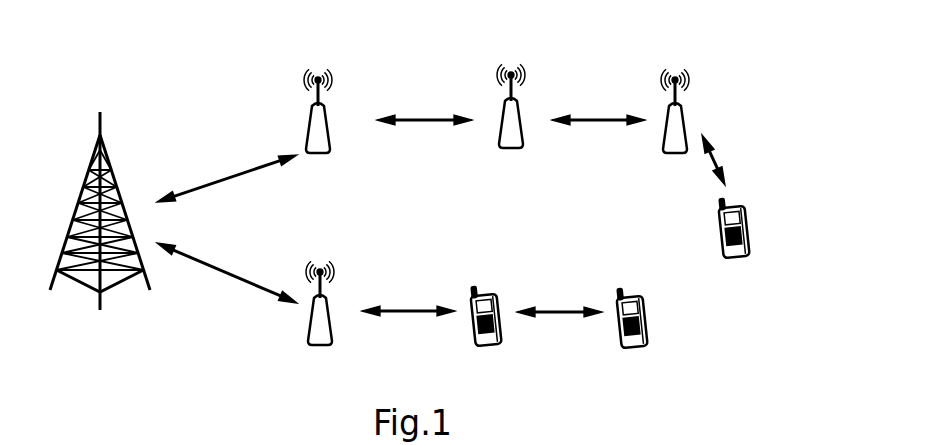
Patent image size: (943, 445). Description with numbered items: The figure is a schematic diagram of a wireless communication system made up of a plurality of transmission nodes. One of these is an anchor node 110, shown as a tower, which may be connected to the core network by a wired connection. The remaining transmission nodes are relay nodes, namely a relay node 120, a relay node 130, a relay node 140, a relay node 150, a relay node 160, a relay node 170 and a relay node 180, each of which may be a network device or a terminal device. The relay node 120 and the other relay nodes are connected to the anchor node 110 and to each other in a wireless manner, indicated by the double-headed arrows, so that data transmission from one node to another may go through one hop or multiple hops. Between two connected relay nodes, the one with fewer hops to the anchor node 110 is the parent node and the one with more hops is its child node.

The anchor node 110 is at (112, 153).
The relay node 120 is at (335, 262).
The relay node 130 is at (513, 257).
The relay node 140 is at (648, 310).
The relay node 150 is at (333, 72).
The relay node 160 is at (526, 65).
The relay node 170 is at (690, 72).
The relay node 180 is at (747, 218).